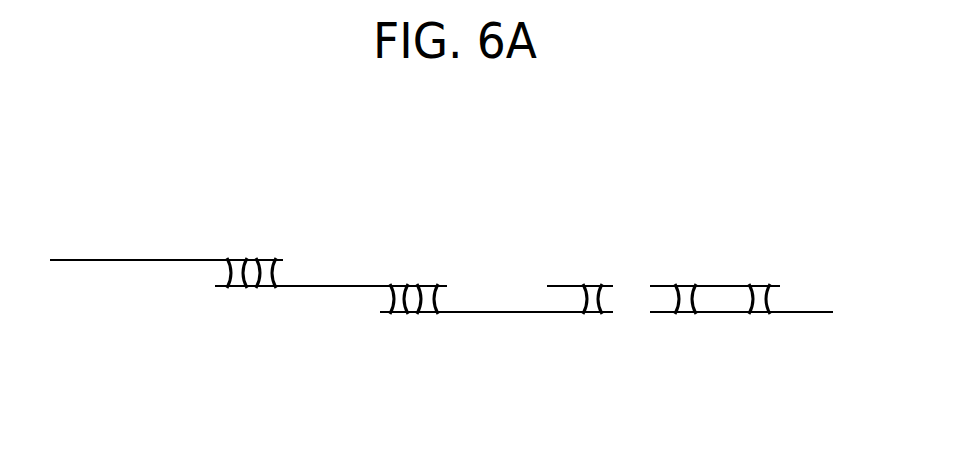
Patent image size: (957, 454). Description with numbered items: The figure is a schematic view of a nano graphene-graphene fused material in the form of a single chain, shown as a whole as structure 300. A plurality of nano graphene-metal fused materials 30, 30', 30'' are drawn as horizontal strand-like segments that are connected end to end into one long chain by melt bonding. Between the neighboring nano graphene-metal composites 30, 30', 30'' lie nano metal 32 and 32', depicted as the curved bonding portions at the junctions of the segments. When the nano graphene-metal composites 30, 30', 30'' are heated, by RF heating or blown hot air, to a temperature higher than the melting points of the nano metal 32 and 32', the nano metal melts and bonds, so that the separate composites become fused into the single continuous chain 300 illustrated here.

The stent segment structure 300 is at (430, 156).
The nano graphene-metal fused material 30 is at (166, 210).
The nano graphene-metal fused material 30' is at (331, 242).
The nano graphene-metal fused material 30'' is at (496, 262).
The nano metal 32 is at (230, 323).
The nano metal 32' is at (402, 344).